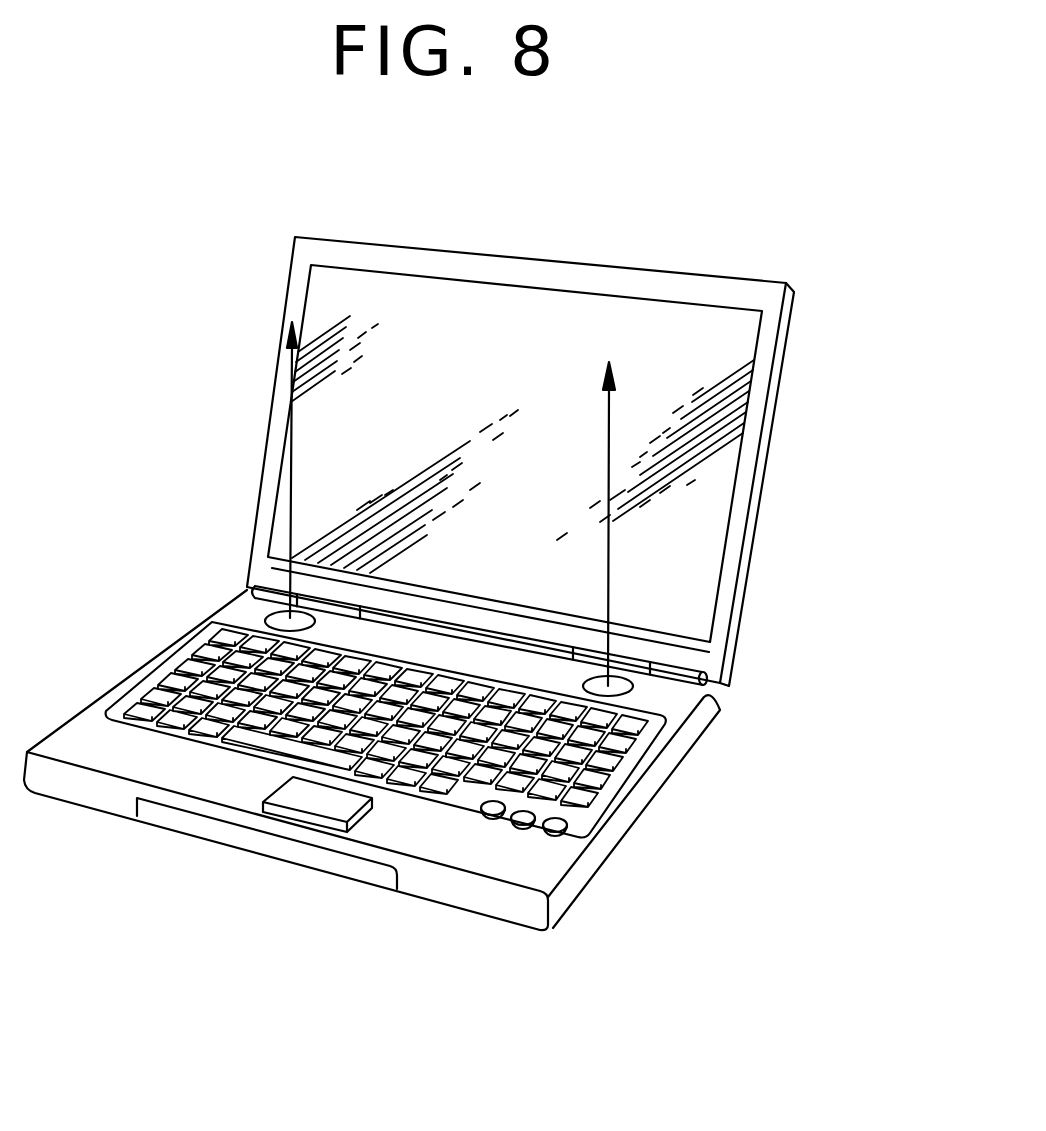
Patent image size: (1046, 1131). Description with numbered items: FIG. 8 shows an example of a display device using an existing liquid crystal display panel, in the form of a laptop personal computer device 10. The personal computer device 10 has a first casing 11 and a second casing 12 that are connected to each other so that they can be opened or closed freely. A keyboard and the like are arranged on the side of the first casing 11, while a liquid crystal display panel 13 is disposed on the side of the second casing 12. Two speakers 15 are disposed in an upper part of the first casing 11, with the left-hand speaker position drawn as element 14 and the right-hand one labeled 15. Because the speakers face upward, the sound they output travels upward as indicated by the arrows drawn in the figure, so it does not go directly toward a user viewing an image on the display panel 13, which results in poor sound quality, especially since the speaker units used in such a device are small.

The personal computer device 10 is at (528, 868).
The first casing 11 is at (655, 785).
The second casing 12 is at (768, 458).
The liquid crystal display panel 13 is at (536, 330).
The first antenna 14 is at (245, 602).
The speakers 15 is at (633, 688).